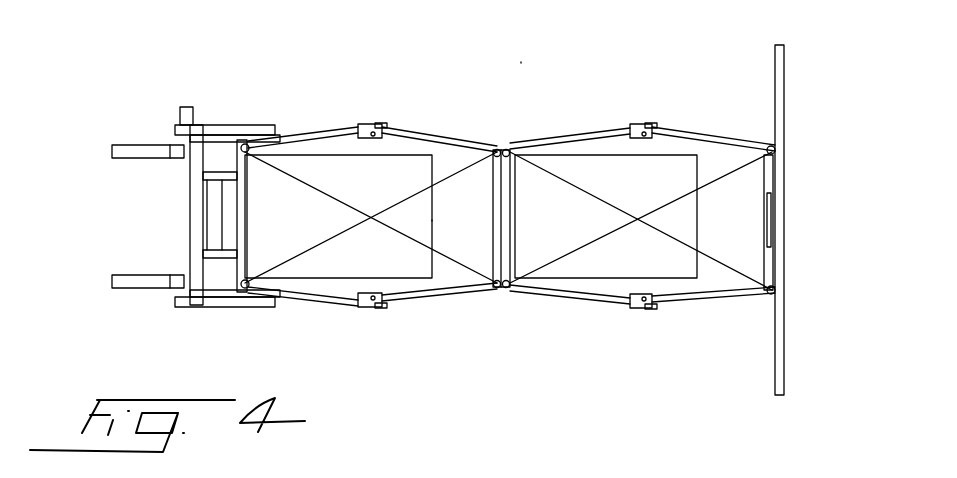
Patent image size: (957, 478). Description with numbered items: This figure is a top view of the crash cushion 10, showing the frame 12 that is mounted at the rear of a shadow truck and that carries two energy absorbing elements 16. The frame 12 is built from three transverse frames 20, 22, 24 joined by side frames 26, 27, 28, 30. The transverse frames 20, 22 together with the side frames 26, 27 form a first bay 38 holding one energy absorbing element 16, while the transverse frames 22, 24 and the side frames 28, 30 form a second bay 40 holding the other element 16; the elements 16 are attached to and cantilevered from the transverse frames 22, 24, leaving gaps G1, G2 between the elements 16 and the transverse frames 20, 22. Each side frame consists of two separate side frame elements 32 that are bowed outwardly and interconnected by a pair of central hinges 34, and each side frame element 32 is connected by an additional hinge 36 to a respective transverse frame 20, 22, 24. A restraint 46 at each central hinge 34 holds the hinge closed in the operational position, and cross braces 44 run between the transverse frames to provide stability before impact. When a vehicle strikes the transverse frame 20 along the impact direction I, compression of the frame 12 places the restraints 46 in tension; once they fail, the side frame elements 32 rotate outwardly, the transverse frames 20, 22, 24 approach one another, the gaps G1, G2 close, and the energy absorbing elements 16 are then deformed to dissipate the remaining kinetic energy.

The crash cushion 10 is at (521, 60).
The frame 12 is at (728, 74).
The energy absorbing element 16 is at (318, 226).
The transverse frame 20 is at (785, 170).
The transverse frame 22 is at (512, 200).
The transverse frame 24 is at (247, 195).
The side frame 26 is at (603, 320).
The side frame 27 is at (607, 126).
The side frame 28 is at (337, 312).
The side frame 30 is at (372, 98).
The side frame element 32 is at (318, 128).
The central hinge 34 is at (405, 133).
The hinge 36 is at (245, 141).
The first bay 38 is at (736, 245).
The second bay 40 is at (464, 244).
The cross brace 44 is at (425, 190).
The restraint 46 is at (392, 124).
The gap G1 is at (492, 200).
The gap G2 is at (763, 200).
The impact direction I is at (797, 220).